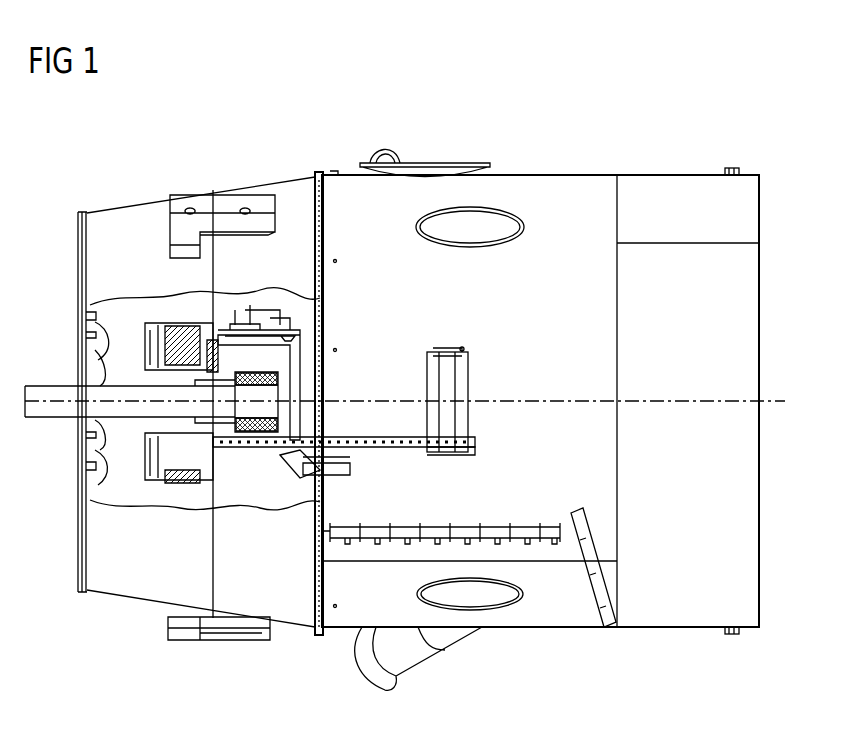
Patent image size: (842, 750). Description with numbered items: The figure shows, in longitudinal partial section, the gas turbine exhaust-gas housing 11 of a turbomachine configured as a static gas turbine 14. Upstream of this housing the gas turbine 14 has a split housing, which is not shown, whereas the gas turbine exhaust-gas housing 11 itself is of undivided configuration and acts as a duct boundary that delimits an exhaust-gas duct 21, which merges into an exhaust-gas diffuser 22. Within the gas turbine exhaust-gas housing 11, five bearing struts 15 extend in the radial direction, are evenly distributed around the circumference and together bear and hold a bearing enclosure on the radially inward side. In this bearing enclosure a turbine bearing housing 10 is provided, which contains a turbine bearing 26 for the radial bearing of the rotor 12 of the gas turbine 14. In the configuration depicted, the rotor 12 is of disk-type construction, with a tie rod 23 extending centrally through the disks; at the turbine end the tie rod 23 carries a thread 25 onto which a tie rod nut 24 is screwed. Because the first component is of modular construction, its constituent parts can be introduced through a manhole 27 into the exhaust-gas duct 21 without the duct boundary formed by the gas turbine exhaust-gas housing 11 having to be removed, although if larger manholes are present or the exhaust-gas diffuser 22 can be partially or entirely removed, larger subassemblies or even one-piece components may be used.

The turbine bearing housing 10 is at (272, 330).
The gas turbine exhaust-gas housing 11 is at (120, 582).
The rotor 12 is at (100, 461).
The gas turbine 14 is at (586, 130).
The bearing struts 15 is at (218, 228).
The exhaust-gas duct 21 is at (360, 251).
The exhaust-gas diffuser 22 is at (588, 232).
The tie rod 23 is at (42, 385).
The tie rod nut 24 is at (220, 432).
The thread 25 is at (275, 420).
The turbine bearing 26 is at (230, 357).
The manhole 27 is at (443, 163).